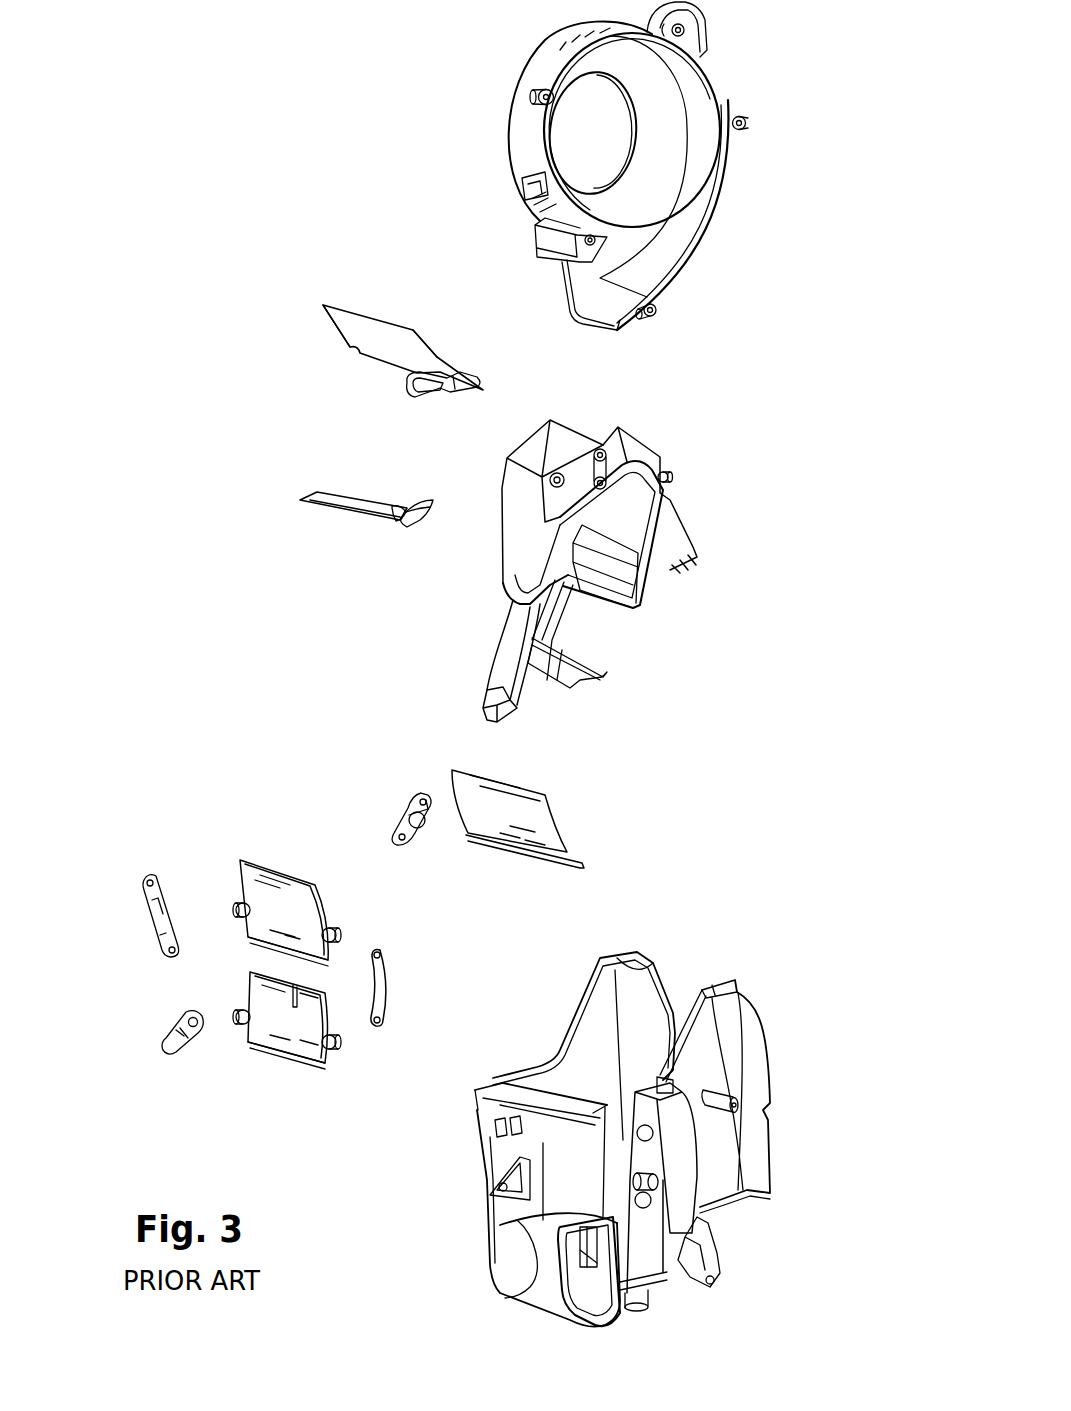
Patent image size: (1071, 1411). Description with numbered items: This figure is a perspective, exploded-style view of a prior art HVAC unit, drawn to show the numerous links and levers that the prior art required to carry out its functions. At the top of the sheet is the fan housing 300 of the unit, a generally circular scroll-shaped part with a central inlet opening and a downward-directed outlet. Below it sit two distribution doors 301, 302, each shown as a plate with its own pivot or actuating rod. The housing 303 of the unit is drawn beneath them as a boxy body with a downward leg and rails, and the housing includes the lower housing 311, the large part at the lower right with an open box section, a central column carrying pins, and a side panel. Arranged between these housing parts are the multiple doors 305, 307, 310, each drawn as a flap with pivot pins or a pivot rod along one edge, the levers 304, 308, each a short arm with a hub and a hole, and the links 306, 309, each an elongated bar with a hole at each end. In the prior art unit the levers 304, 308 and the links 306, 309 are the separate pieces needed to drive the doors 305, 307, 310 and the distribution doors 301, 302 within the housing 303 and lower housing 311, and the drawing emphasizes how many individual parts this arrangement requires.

The fan housing 300 is at (540, 64).
The distribution door 301 is at (385, 322).
The distribution door 302 is at (337, 497).
The housing 303 is at (510, 553).
The lever 304 is at (413, 802).
The door 305 is at (275, 902).
The link 306 is at (153, 910).
The door 307 is at (282, 1023).
The lever 308 is at (177, 1030).
The link 309 is at (380, 978).
The door 310 is at (527, 813).
The lower housing 311 is at (513, 1265).